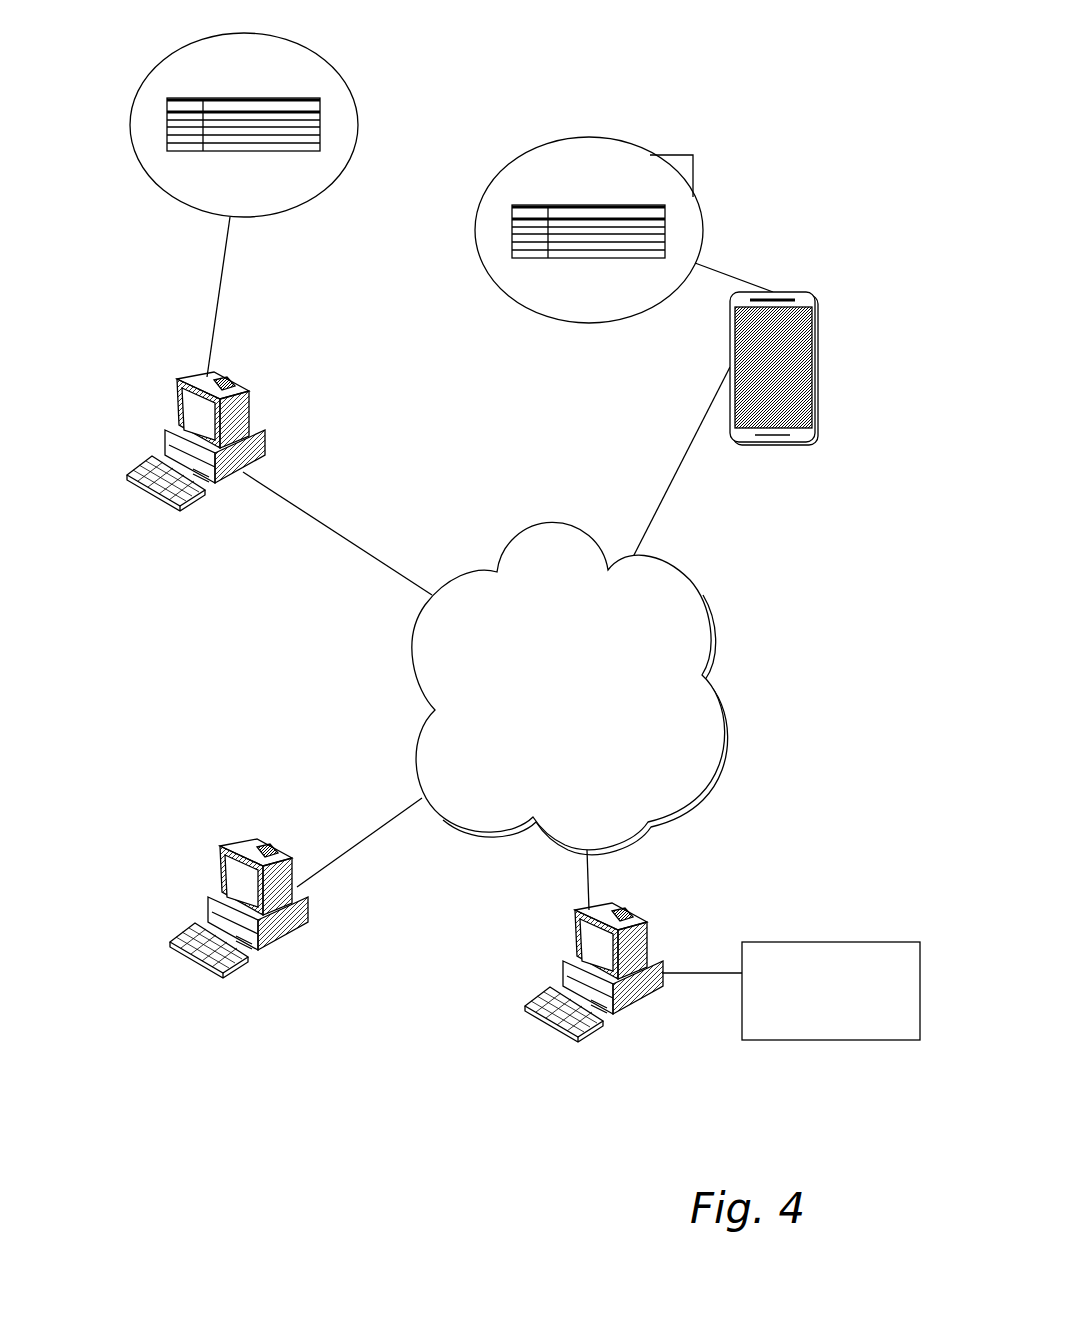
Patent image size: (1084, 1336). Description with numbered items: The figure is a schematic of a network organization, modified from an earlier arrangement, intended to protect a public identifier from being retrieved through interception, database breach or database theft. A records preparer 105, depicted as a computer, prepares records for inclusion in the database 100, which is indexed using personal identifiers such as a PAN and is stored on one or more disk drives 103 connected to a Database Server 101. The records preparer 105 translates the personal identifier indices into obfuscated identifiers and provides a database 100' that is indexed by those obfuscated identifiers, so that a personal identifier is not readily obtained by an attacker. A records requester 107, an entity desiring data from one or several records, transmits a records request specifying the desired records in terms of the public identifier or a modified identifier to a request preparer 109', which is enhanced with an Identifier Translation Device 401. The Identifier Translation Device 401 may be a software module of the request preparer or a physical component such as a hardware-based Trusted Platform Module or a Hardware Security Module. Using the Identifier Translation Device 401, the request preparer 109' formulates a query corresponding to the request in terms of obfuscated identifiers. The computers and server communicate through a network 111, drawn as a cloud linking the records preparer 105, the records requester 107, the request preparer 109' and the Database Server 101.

The database 100 is at (181, 136).
The database indexed by obfuscated identifiers 100' is at (525, 243).
The disk drives 103 is at (165, 185).
The records preparer 105 is at (198, 377).
The records requester 107 is at (228, 842).
The request preparer 109' is at (612, 977).
The Database Server 101 is at (778, 292).
The network 111 is at (410, 643).
The Identifier Translation Device 401 is at (880, 1040).